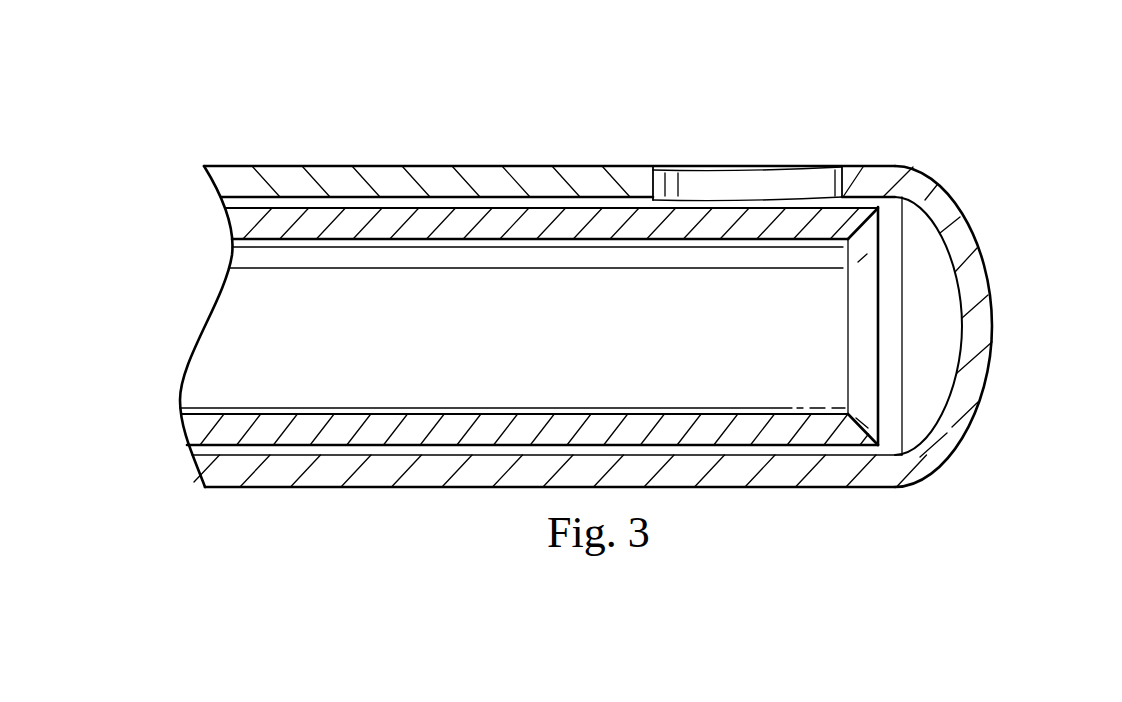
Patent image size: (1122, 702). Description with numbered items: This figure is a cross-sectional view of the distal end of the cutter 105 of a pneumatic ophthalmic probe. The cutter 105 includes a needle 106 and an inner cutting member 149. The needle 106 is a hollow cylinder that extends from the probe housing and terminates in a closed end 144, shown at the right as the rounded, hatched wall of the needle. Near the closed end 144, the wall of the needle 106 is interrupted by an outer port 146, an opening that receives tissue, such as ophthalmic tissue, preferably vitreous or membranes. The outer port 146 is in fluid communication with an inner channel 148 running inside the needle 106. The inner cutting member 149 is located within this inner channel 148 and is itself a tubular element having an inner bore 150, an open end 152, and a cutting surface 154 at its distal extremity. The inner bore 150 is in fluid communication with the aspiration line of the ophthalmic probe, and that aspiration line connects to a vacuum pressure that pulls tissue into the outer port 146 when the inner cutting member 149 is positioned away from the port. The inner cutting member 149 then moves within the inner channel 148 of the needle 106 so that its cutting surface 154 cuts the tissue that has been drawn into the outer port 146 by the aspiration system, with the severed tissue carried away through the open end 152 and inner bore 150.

The cutter 105 is at (466, 129).
The needle 106 is at (287, 178).
The closed end 144 is at (992, 323).
The outer port 146 is at (750, 183).
The inner channel 148 is at (858, 203).
The inner cutting member 149 is at (342, 427).
The inner bore 150 is at (565, 342).
The open end 152 is at (865, 345).
The cutting surface 154 is at (880, 220).